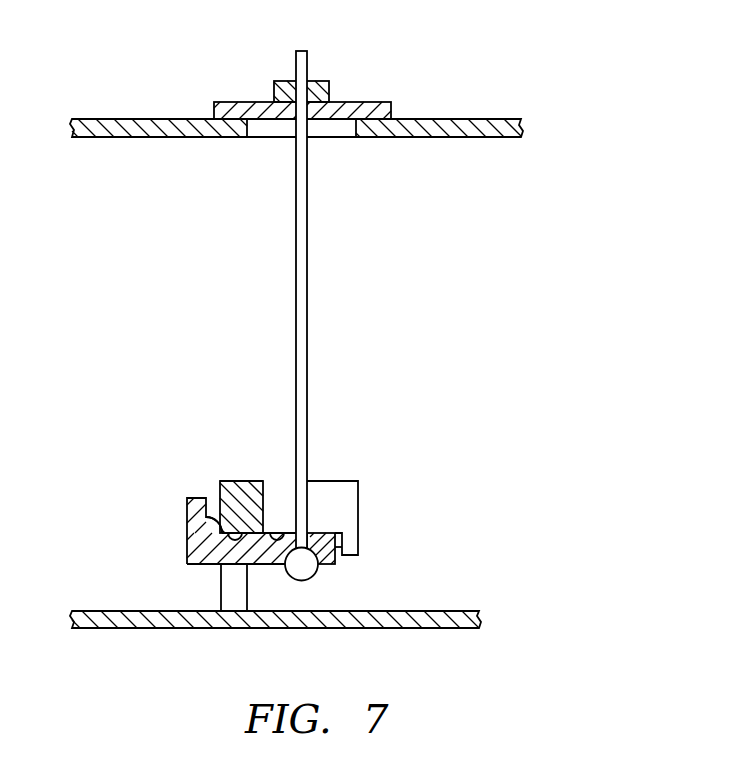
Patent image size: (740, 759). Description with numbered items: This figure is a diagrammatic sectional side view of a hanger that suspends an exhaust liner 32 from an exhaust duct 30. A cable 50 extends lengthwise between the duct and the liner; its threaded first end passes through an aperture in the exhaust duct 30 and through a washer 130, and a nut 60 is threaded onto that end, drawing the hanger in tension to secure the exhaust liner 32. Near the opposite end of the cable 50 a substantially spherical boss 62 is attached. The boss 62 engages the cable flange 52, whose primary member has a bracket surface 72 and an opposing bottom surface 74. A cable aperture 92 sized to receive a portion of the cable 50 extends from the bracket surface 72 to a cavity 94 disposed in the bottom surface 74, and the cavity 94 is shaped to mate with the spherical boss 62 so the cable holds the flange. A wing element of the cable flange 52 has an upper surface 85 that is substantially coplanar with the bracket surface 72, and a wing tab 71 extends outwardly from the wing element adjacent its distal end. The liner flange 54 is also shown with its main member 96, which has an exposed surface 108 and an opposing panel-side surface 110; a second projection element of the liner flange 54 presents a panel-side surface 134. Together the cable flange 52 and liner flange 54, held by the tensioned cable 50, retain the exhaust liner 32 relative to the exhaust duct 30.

The exhaust duct 30 is at (487, 118).
The exhaust liner 32 is at (140, 630).
The cable 50 is at (340, 321).
The cable flange 52 is at (271, 362).
The liner flange 54 is at (373, 488).
The nut 60 is at (330, 88).
The boss 62 is at (302, 572).
The wing tab 71 is at (187, 498).
The bracket surface 72 is at (251, 566).
The bottom surface 74 is at (273, 566).
The upper surface 85 is at (207, 521).
The cable aperture 92 is at (338, 535).
The cavity 94 is at (345, 547).
The main member 96 is at (242, 466).
The exposed surface 108 is at (222, 481).
The panel-side surface 110 is at (200, 548).
The washer 130 is at (232, 108).
The panel-side surface 134 is at (262, 531).